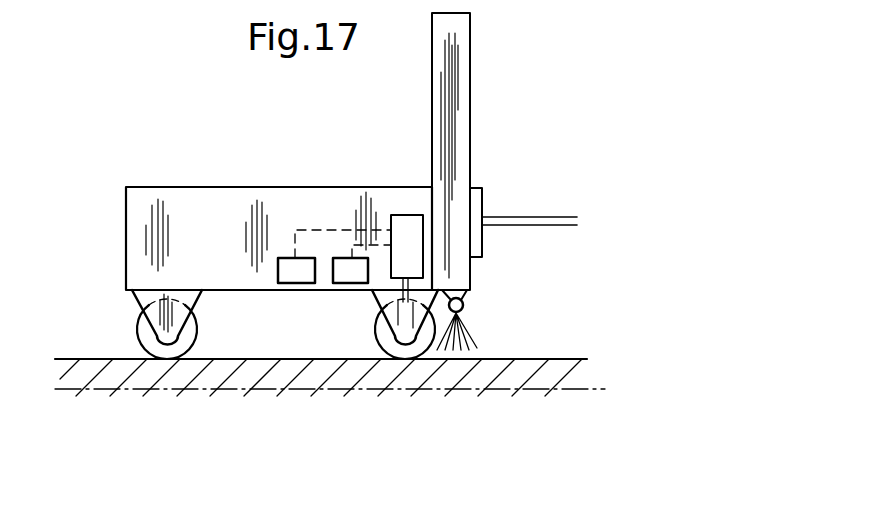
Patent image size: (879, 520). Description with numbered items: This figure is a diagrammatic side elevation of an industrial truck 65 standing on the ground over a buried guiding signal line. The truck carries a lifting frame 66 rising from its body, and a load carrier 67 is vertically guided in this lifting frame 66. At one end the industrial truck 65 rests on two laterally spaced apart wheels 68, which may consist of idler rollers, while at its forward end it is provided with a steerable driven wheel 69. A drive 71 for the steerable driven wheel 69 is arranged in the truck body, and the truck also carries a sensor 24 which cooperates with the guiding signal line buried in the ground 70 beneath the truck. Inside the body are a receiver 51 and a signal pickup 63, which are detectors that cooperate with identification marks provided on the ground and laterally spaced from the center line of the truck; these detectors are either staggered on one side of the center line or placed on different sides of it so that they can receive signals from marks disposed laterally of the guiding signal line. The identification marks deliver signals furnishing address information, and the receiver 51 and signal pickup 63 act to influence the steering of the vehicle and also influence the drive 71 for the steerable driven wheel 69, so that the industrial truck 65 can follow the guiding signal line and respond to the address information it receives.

The sensor 24 is at (465, 303).
The receiver 51 is at (288, 270).
The signal pickup 63 is at (344, 270).
The industrial truck 65 is at (198, 206).
The lifting frame 66 is at (453, 57).
The load carrier 67 is at (473, 203).
The wheels 68 is at (165, 350).
The steerable driven wheel 69 is at (405, 350).
The ground surface 70 is at (310, 361).
The drive 71 is at (410, 232).